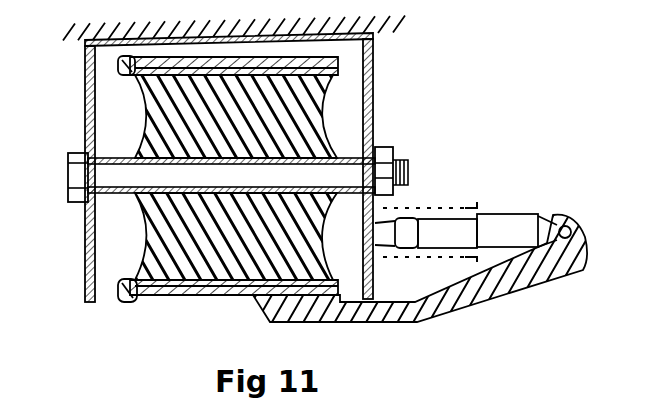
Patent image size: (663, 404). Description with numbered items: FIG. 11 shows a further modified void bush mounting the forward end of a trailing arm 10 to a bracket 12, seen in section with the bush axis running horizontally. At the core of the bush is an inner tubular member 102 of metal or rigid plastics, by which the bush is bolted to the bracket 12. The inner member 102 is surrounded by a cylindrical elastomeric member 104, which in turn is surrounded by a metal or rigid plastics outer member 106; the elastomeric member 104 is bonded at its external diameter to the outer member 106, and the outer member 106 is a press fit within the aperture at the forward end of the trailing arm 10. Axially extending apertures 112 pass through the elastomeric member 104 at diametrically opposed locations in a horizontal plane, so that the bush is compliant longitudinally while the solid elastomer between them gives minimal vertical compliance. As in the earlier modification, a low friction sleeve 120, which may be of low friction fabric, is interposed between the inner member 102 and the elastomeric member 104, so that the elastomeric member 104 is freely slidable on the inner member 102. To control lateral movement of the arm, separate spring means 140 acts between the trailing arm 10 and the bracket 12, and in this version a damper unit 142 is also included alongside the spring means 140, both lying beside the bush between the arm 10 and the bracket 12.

The trailing arm 10 is at (355, 310).
The bracket 12 is at (83, 82).
The inner tubular member 102 is at (112, 155).
The elastomeric member 104 is at (338, 84).
The outer member 106 is at (193, 292).
The axially extending apertures 112 is at (120, 300).
The low friction sleeve 120 is at (327, 147).
The spring means 140 is at (433, 208).
The damper unit 142 is at (503, 215).